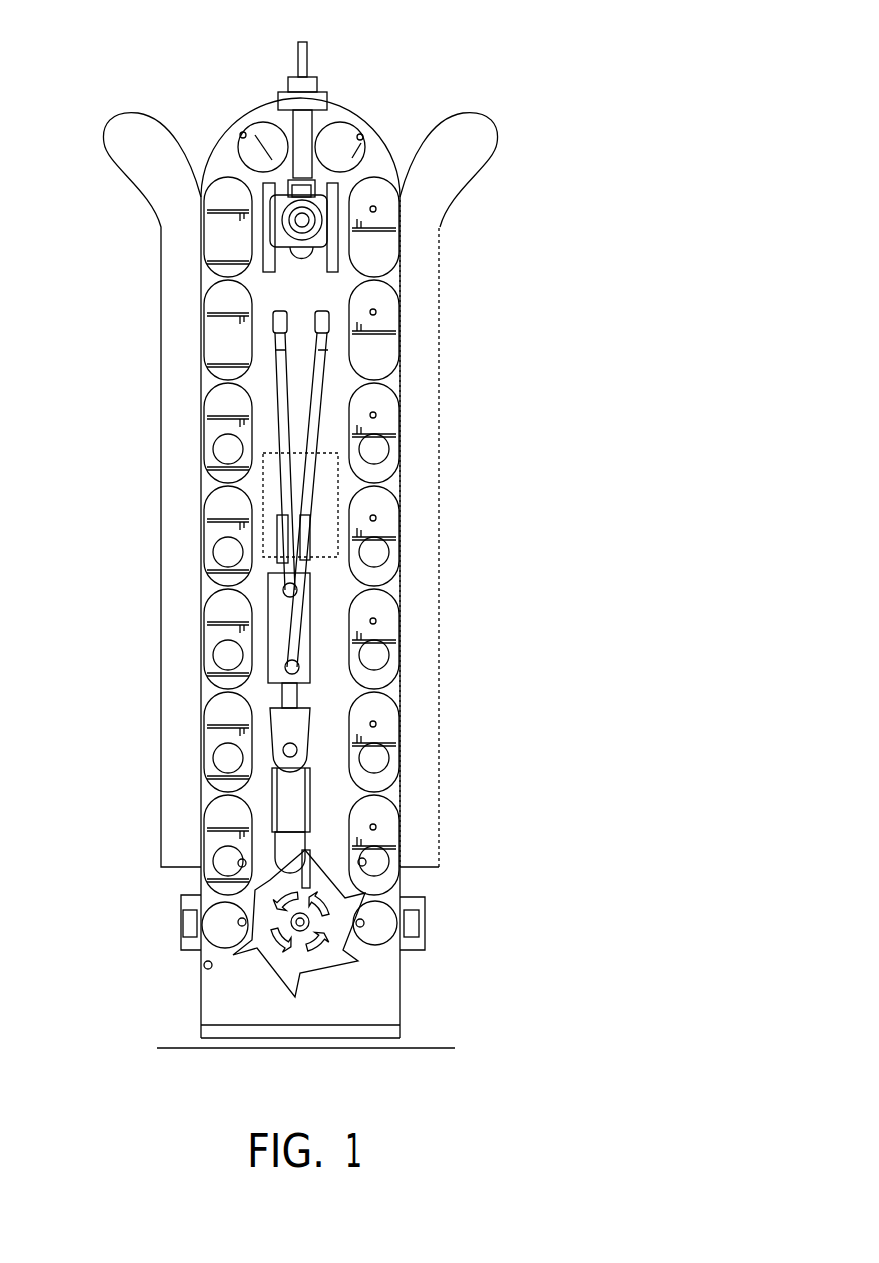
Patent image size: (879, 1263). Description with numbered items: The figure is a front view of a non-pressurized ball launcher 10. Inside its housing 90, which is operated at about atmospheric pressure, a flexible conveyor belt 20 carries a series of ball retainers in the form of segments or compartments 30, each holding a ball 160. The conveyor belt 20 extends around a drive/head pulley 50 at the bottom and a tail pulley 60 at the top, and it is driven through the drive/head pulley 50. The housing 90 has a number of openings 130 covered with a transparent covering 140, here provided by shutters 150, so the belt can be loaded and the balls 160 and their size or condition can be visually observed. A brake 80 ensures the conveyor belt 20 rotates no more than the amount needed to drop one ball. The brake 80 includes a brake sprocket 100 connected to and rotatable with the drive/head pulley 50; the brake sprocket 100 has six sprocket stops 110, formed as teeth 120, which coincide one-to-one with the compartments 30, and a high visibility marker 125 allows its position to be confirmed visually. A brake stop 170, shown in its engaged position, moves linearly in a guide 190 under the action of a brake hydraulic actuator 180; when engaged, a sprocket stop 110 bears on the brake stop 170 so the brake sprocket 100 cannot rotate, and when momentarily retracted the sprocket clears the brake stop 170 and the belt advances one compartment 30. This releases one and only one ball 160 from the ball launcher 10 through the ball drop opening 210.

The non-pressurized ball launcher 10 is at (420, 46).
The conveyor belt 20 is at (250, 235).
The segments or compartments 30 is at (205, 632).
The drive/head pulley 50 is at (257, 990).
The tail pulley 60 is at (247, 177).
The brake 80 is at (293, 956).
The housing 90 is at (307, 287).
The brake sprocket 100 is at (260, 958).
The sprocket stops 110 is at (365, 953).
The teeth 120 is at (347, 960).
The high visibility marker 125 is at (310, 877).
The openings 130 is at (218, 338).
The transparent covering 140 is at (428, 363).
The shutters 150 is at (428, 400).
The balls 160 is at (205, 545).
The brake stop 170 is at (310, 837).
The brake hydraulic actuator 180 is at (313, 607).
The guide 190 is at (310, 788).
The ball drop opening 210 is at (257, 1054).